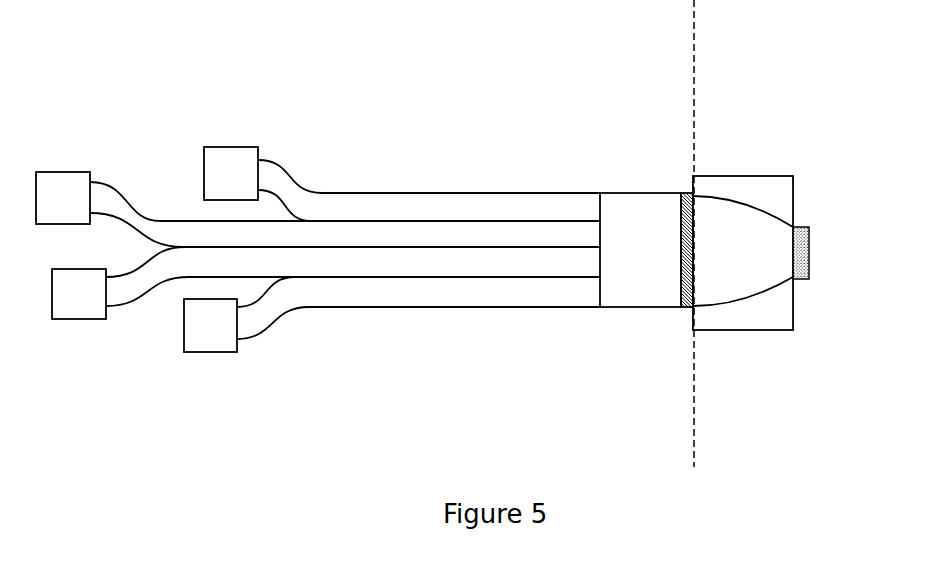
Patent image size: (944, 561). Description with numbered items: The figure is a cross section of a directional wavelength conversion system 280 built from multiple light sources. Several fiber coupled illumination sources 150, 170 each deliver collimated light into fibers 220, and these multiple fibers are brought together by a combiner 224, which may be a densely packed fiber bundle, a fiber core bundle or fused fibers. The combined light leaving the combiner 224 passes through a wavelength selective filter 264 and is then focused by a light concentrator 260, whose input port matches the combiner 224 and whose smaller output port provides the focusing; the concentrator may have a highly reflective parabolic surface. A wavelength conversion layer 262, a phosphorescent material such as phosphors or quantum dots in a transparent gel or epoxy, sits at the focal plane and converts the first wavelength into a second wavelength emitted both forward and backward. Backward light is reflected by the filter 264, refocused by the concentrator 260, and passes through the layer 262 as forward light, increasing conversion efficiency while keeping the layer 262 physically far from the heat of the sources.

The light source 150 is at (88, 172).
The light source 170 is at (243, 147).
The optical fibers 220 is at (427, 197).
The combiner 224 is at (632, 194).
The light concentrator 260 is at (753, 205).
The wavelength conversion layer 262 is at (808, 280).
The wavelength selective filter 264 is at (688, 307).
The multiple light sources 280 is at (568, 87).